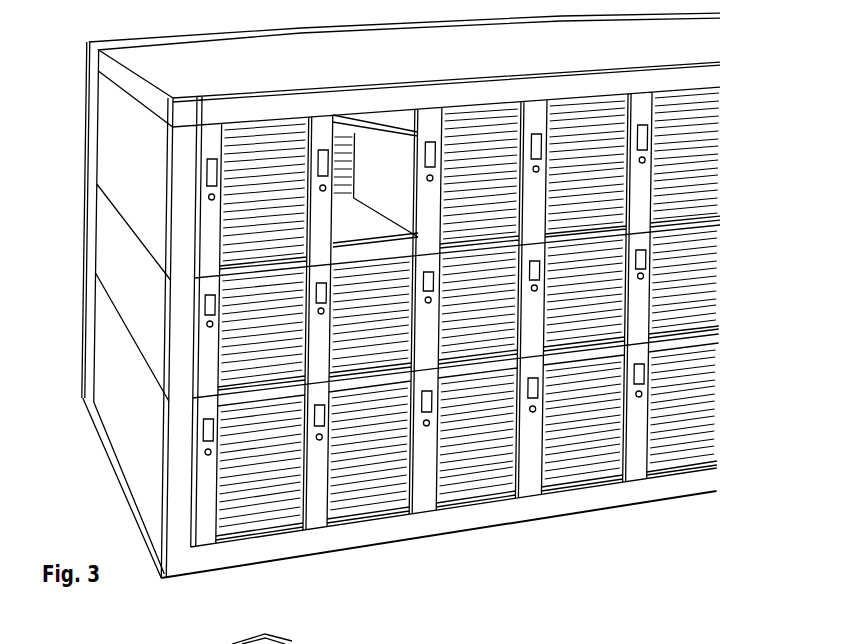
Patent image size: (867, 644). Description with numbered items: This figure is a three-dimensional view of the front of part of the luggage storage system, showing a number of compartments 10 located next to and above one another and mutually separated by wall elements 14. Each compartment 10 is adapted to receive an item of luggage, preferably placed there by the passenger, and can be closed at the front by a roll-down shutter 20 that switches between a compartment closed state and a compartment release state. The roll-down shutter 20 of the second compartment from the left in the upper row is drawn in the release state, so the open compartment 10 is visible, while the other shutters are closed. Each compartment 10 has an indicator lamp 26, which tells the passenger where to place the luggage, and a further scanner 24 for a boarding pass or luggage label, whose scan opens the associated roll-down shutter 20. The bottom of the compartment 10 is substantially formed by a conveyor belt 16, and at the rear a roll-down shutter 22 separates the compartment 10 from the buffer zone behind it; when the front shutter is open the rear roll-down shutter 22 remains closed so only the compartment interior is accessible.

The compartment 10 is at (413, 97).
The wall element 14 is at (404, 191).
The conveyor belt 16 is at (387, 235).
The roll-down shutter 20 is at (262, 140).
The roll-down shutter 22 is at (352, 146).
The further scanner 24 is at (326, 152).
The indicator lamp 26 is at (324, 192).